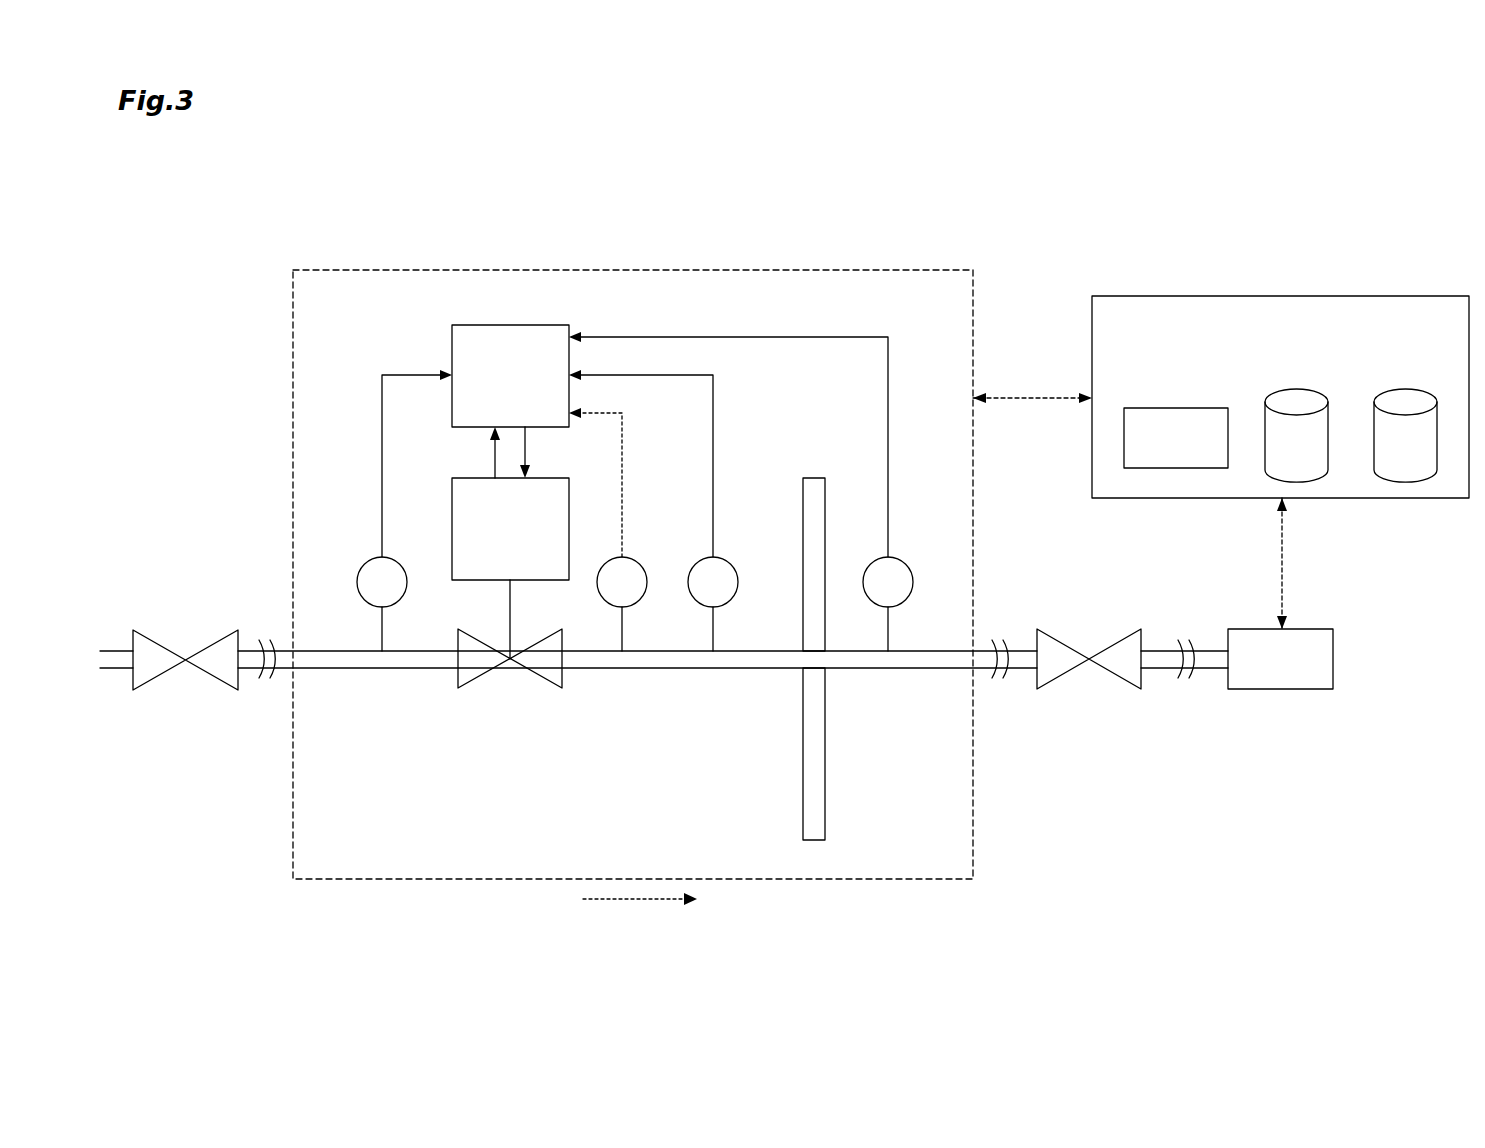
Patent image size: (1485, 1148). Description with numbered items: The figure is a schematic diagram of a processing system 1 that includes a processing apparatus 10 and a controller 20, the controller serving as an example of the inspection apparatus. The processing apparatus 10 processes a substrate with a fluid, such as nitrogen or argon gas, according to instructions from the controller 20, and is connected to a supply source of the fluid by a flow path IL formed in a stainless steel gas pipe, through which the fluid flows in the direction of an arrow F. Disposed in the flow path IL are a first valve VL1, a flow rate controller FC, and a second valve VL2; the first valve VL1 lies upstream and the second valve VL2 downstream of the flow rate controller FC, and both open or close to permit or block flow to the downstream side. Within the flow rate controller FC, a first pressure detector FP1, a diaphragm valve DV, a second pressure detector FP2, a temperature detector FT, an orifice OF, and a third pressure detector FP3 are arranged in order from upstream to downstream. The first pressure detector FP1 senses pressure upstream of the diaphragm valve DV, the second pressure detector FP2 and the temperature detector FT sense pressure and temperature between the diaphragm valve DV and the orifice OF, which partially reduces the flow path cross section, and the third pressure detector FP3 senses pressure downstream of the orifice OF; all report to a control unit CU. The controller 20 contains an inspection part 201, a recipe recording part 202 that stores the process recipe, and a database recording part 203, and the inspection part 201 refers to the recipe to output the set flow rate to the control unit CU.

The processing system 1 is at (1232, 152).
The flow rate controller FC is at (975, 262).
The control unit CU is at (452, 336).
The first pressure detector FP1 is at (362, 562).
The second pressure detector FP2 is at (640, 565).
The third pressure detector FP3 is at (910, 562).
The temperature detector FT is at (732, 563).
The orifice OF is at (817, 478).
The diaphragm valve DV is at (545, 688).
The flow path IL is at (710, 670).
The first valve VL1 is at (207, 638).
The second valve VL2 is at (1112, 638).
The arrow F is at (640, 917).
The processing apparatus 10 is at (1333, 645).
The controller 20 is at (1418, 296).
The inspection part 201 is at (1192, 408).
The recipe recording part 202 is at (1297, 390).
The database recording part 203 is at (1406, 390).